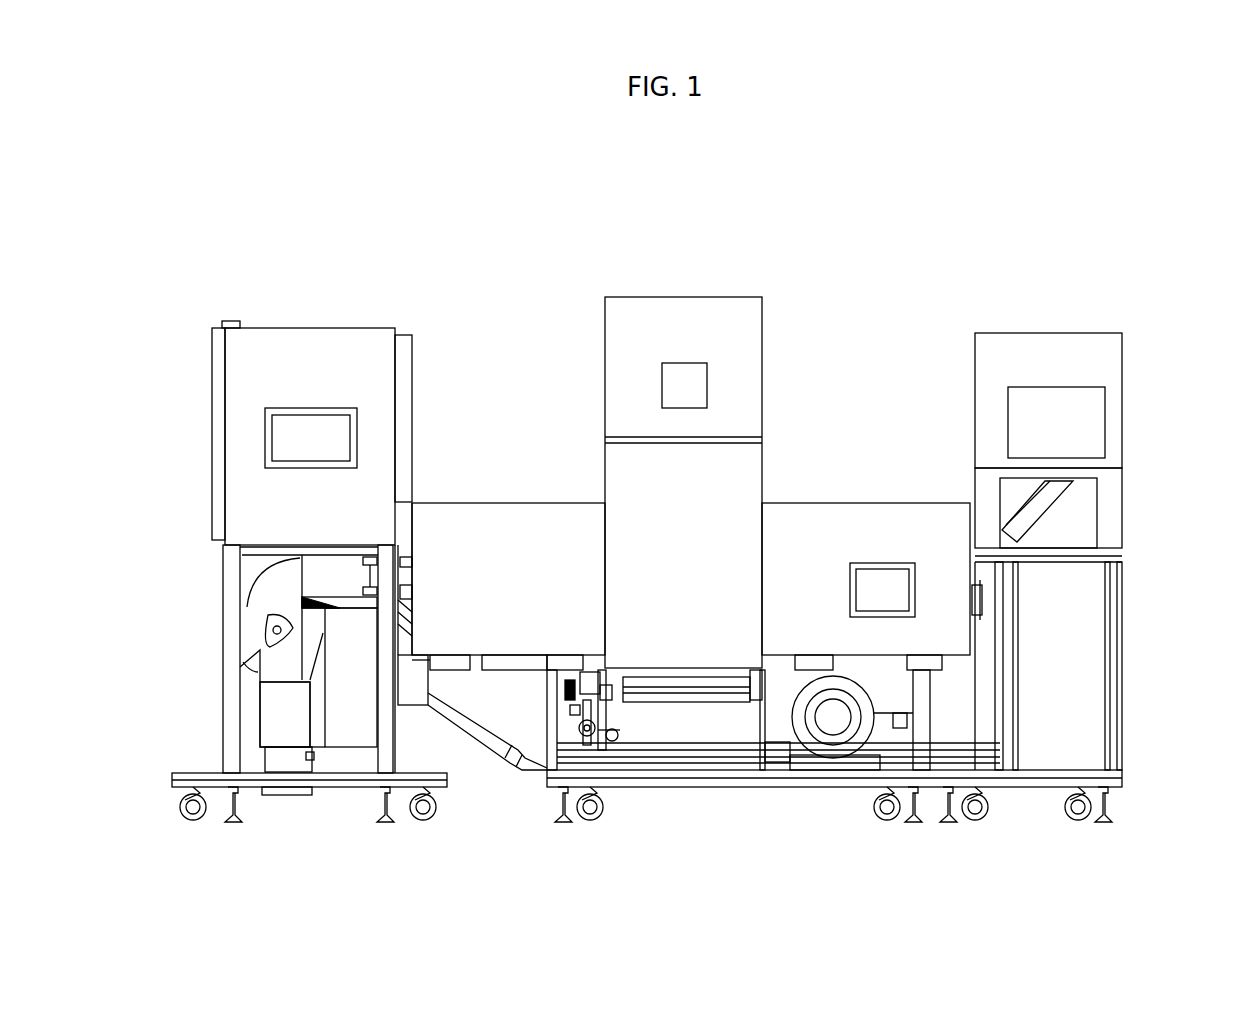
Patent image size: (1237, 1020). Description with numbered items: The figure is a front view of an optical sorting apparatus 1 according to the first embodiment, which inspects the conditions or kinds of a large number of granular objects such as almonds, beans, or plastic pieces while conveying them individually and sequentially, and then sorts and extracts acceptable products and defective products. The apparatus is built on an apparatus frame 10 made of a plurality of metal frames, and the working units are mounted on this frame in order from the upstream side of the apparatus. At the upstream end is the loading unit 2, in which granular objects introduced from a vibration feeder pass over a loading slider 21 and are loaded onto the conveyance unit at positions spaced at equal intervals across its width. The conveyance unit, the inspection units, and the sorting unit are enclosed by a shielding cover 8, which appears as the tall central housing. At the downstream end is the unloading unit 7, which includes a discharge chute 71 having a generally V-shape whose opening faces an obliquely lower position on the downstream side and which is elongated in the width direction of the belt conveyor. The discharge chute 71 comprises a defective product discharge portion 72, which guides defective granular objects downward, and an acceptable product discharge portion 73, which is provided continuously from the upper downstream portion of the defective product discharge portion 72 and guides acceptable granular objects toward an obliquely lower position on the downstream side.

The optical sorting apparatus 1 is at (1100, 231).
The loading unit 2 is at (1122, 326).
The unloading unit 7 is at (245, 576).
The discharge chute 71 is at (243, 600).
The defective product discharge portion 72 is at (327, 745).
The acceptable product discharge portion 73 is at (258, 680).
The shielding cover 8 is at (763, 297).
The apparatus frame 10 is at (1124, 600).
The loading slider 21 is at (1052, 508).